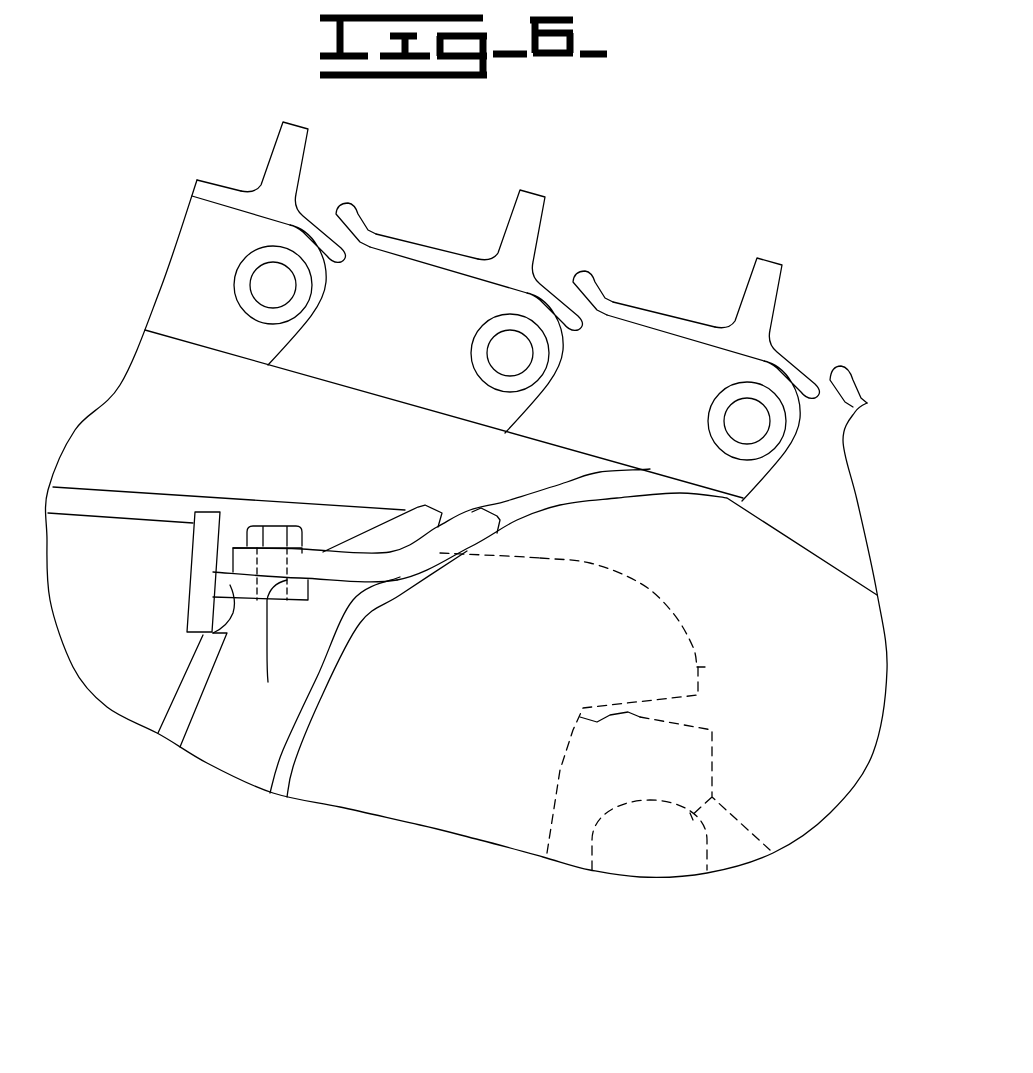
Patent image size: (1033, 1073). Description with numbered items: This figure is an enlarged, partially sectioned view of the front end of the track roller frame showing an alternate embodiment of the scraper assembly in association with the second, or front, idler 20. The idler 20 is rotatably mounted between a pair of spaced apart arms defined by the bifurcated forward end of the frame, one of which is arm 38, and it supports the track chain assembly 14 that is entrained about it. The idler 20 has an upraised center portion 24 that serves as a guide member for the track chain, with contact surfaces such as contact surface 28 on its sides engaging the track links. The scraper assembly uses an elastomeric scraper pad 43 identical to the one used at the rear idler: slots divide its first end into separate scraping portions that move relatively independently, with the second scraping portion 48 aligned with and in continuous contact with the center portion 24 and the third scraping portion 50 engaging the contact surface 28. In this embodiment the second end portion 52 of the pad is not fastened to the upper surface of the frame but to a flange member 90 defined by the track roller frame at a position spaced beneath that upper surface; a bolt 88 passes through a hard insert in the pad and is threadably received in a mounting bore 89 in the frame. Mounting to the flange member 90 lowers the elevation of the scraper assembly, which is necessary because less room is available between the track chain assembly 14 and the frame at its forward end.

The track chain assembly 14 is at (533, 190).
The second idler 20 is at (492, 808).
The center portion 24 is at (567, 483).
The contact surface 28 is at (520, 515).
The arm 38 is at (705, 667).
The scraper pad 43 is at (335, 572).
The second scraping portion 48 is at (388, 515).
The third scraping portion 50 is at (440, 548).
The second end portion 52 is at (303, 565).
The bolt 88 is at (270, 527).
The mounting bore 89 is at (268, 680).
The flange member 90 is at (213, 633).